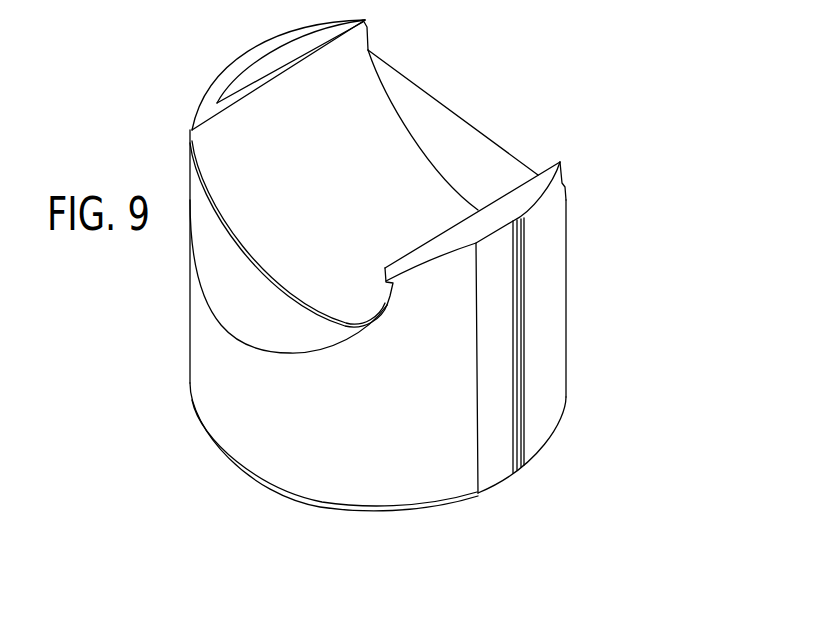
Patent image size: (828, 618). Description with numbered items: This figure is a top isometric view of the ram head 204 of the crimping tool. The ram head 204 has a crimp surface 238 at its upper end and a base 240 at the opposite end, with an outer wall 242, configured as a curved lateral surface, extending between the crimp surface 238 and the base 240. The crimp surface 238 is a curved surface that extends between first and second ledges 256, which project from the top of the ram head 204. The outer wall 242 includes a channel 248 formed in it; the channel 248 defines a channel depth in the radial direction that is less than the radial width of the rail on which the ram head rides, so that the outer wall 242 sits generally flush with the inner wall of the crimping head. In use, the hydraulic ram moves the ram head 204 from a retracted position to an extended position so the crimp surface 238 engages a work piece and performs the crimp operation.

The ram head 204 is at (610, 146).
The crimp surface 238 is at (262, 210).
The base 240 is at (290, 505).
The outer wall 242 is at (392, 475).
The channel 248 is at (492, 380).
The ledges 256 is at (308, 60).